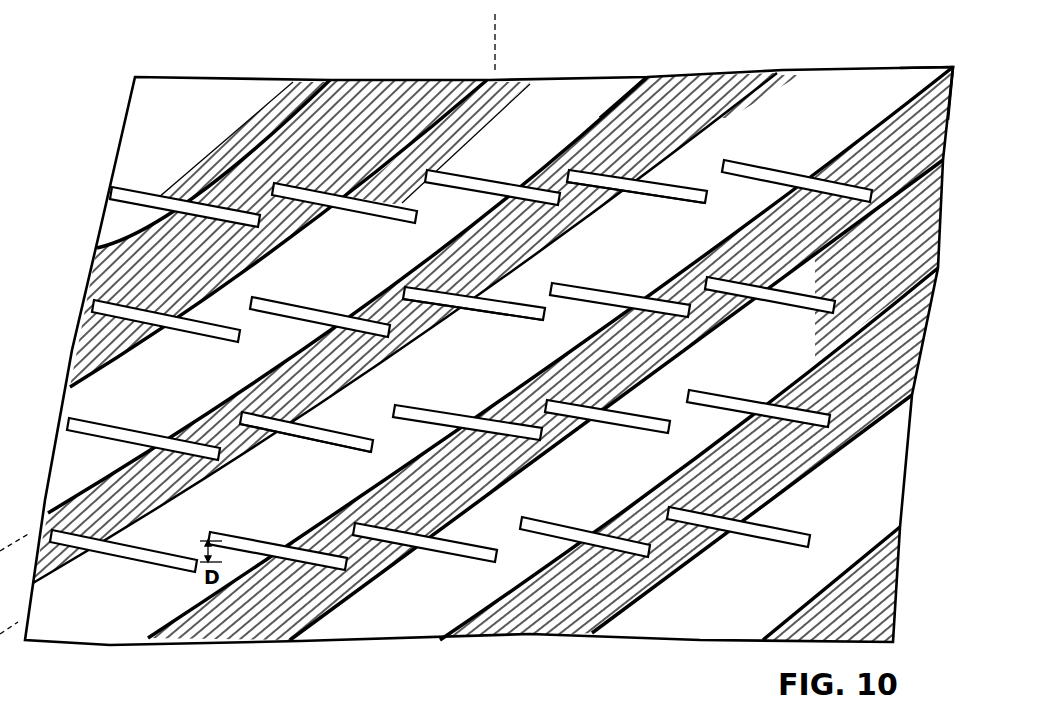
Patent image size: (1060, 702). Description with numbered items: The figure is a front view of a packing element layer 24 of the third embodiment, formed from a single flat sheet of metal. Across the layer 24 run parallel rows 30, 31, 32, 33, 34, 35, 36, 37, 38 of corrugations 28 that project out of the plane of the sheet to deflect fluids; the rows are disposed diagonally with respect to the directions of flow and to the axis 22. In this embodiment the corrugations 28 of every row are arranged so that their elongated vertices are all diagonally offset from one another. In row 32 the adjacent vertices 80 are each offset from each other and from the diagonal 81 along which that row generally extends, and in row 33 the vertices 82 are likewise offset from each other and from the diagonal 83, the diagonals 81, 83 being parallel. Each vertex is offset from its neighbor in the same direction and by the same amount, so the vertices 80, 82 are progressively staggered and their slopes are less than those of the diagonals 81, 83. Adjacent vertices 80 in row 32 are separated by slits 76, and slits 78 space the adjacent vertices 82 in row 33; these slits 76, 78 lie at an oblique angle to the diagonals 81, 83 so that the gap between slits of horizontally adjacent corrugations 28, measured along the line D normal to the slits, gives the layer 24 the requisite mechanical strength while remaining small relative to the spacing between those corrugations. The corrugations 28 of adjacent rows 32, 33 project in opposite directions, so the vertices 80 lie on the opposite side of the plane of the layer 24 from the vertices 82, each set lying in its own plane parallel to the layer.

The axis 22 is at (495, 22).
The layer 24 is at (982, 320).
The corrugations 28 is at (435, 219).
The row 30 is at (333, 71).
The row 31 is at (499, 78).
The row 32 is at (646, 72).
The row 33 is at (785, 70).
The row 34 is at (960, 63).
The row 35 is at (951, 166).
The row 36 is at (946, 270).
The row 37 is at (918, 399).
The row 38 is at (910, 522).
The slits 76 is at (470, 171).
The slits 78 is at (649, 205).
The elongated vertices 80 is at (398, 276).
The diagonal 81 is at (30, 532).
The elongated vertices 82 is at (733, 120).
The diagonal 83 is at (11, 648).